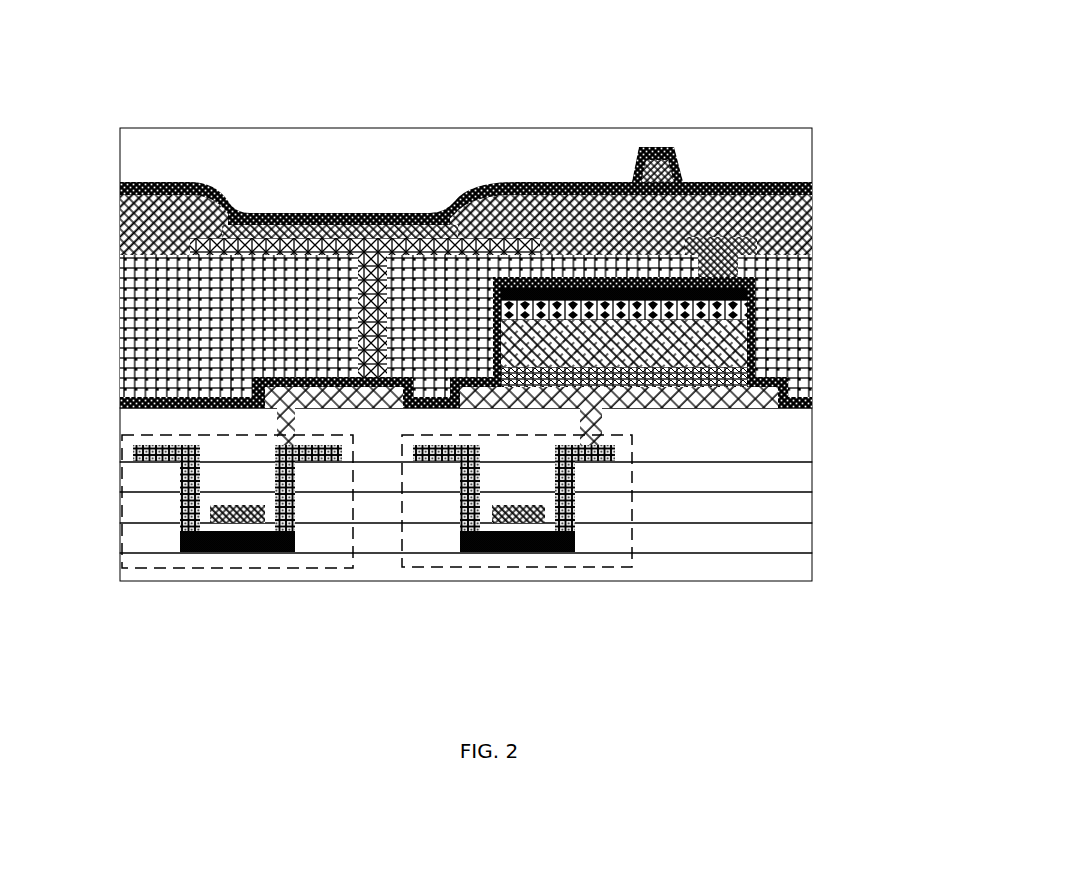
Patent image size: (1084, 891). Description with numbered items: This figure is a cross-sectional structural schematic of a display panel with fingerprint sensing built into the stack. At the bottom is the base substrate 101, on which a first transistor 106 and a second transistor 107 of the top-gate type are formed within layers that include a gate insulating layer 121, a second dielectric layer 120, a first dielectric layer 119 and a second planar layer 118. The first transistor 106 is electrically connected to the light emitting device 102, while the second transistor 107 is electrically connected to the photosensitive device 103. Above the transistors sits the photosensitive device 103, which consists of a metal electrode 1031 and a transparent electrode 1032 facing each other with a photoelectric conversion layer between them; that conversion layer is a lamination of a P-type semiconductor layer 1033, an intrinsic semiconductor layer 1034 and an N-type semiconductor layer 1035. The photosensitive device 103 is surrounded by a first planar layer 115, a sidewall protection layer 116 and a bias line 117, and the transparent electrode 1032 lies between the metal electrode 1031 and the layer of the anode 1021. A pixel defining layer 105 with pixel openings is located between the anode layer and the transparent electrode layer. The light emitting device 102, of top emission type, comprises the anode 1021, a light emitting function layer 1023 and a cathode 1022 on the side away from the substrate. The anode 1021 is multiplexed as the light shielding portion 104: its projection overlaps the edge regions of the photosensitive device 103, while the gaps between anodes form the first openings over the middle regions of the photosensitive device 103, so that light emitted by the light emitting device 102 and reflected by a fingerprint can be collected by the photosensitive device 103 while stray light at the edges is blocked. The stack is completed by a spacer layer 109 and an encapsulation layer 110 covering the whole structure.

The base substrate 101 is at (798, 562).
The light emitting device 102 is at (365, 196).
The anode 1021 is at (365, 212).
The cathode 1022 is at (270, 47).
The light emitting function layer 1023 is at (331, 213).
The photosensitive device 103 is at (611, 361).
The metal electrode 1031 is at (735, 398).
The transparent electrode 1032 is at (752, 290).
The P-type semiconductor layer 1033 is at (752, 373).
The intrinsic semiconductor layer 1034 is at (752, 341).
The N-type semiconductor layer 1035 is at (752, 312).
The light shielding portion 104 is at (365, 307).
The pixel defining layer 105 is at (123, 238).
The first transistor 106 is at (227, 568).
The second transistor 107 is at (506, 567).
The spacer layer 109 is at (653, 147).
The encapsulation layer 110 is at (132, 163).
The first planar layer 115 is at (137, 308).
The sidewall protection layer 116 is at (135, 402).
The bias line 117 is at (726, 182).
The second planar layer 118 is at (798, 434).
The first dielectric layer 119 is at (798, 476).
The second dielectric layer 120 is at (798, 507).
The gate insulating layer 121 is at (798, 536).